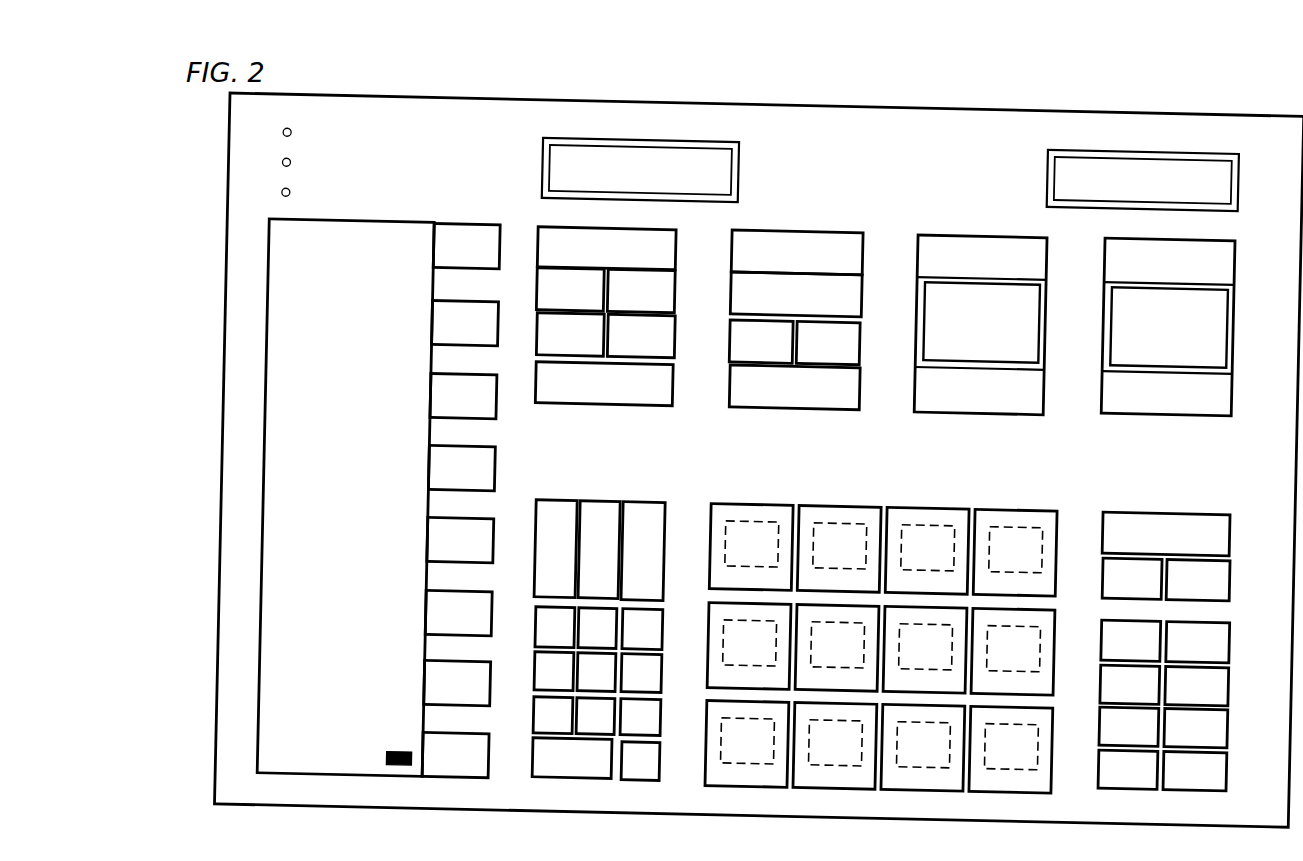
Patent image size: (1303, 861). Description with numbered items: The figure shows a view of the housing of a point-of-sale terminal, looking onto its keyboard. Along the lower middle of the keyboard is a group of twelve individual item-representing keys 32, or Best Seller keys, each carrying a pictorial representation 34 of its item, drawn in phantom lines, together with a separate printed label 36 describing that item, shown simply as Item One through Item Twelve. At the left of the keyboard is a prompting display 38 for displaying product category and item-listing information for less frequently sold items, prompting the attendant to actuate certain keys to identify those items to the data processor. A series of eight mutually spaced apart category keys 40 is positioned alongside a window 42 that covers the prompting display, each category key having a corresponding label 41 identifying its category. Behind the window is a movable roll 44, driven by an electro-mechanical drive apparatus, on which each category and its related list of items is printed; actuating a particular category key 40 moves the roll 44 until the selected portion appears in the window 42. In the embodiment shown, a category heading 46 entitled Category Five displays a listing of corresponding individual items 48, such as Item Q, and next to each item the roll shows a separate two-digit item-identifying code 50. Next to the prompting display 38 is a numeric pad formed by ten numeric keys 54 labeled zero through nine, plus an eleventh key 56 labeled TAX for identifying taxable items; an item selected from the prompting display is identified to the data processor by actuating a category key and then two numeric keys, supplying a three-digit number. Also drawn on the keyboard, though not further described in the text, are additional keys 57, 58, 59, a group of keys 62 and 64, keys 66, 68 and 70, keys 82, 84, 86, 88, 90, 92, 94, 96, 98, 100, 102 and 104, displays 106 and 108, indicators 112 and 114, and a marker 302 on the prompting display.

The item-representing key 32 is at (781, 493).
The pictorial representation 34 is at (950, 508).
The label 36 is at (724, 571).
The prompting display 38 is at (230, 478).
The category key 40 is at (500, 256).
The label 41 is at (498, 333).
The window 42 is at (273, 378).
The movable roll 44 is at (324, 771).
The category heading 46 is at (280, 233).
The individual items 48 is at (280, 401).
The item-identifying code 50 is at (430, 339).
The numeric key 54 is at (668, 666).
The TAX key 56 is at (666, 764).
The special item key 57 is at (582, 498).
The special item key 58 is at (625, 498).
The clear key 59 is at (670, 498).
The total key 62 is at (1234, 616).
The total key group 64 is at (1158, 768).
The sign in key 66 is at (1114, 563).
The sign out key 68 is at (1240, 566).
The void key 70 is at (1150, 502).
The one dollar key 82 is at (1117, 244).
The reject key 84 is at (1238, 370).
The five dollar key 86 is at (928, 243).
The reject key 88 is at (1050, 370).
The ten dollar key 90 is at (742, 243).
The twenty dollar key 92 is at (744, 285).
The check key 94 is at (745, 333).
The others key 96 is at (866, 335).
The reject key 98 is at (864, 374).
The SS key / item indicator 100 is at (284, 131).
The coupon key 102 is at (672, 296).
The reject key 104 is at (680, 376).
The amount of sale display 106 is at (741, 159).
The amount tendered display 108 is at (1050, 162).
The tax indicator 112 is at (284, 161).
The total indicator 114 is at (284, 191).
The cursor 302 is at (400, 762).